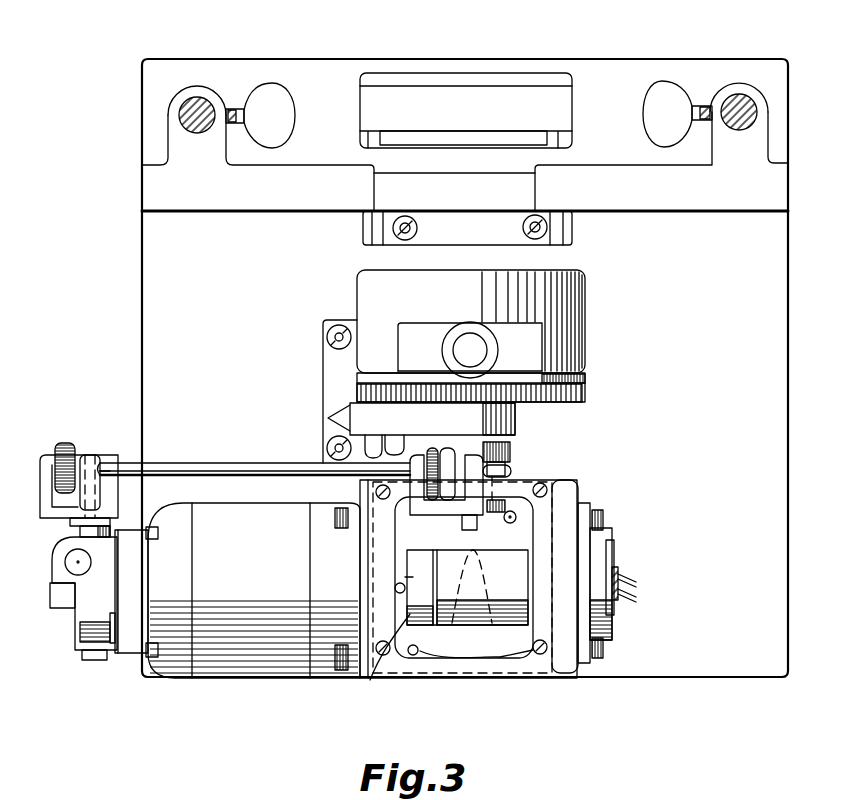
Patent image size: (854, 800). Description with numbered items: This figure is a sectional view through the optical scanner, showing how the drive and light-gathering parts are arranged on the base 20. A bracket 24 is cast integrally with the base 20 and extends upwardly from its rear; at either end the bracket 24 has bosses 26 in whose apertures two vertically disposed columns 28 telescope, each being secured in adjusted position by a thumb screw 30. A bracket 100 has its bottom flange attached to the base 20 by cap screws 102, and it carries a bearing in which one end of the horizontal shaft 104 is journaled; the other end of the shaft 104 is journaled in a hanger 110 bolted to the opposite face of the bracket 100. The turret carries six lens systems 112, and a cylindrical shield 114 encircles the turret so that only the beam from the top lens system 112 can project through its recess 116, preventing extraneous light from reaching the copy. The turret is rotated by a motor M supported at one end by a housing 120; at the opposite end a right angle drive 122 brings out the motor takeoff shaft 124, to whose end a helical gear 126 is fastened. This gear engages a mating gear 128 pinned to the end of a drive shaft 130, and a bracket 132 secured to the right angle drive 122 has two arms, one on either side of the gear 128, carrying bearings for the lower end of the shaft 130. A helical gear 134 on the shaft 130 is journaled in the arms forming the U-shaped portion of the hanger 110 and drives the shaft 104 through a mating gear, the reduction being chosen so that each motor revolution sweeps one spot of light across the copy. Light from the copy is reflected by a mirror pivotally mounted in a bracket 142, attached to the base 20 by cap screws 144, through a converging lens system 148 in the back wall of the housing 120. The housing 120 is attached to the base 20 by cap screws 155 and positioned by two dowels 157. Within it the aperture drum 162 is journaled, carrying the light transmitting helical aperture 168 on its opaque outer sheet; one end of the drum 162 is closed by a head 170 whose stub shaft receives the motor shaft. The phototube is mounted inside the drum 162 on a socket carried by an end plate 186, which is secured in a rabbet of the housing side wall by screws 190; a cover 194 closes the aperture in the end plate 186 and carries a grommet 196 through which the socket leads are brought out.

The base 20 is at (730, 662).
The bracket 24 is at (678, 197).
The bosses 26 is at (190, 87).
The columns 28 is at (180, 110).
The thumb screws 30 is at (275, 108).
The bracket 100 is at (332, 358).
The cap screws 102 is at (330, 330).
The horizontal shaft 104 is at (474, 536).
The hanger 110 is at (438, 515).
The lens systems 112 is at (497, 328).
The cylindrical shield 114 is at (580, 296).
The recess 116 is at (412, 324).
The housing 120 is at (396, 695).
The right angle drive 122 is at (85, 645).
The motor takeoff shaft 124 is at (110, 503).
The helical gear 126 is at (88, 467).
The mating gear 128 is at (67, 452).
The drive shaft 130 is at (230, 466).
The bracket 132 is at (50, 510).
The helical gear 134 is at (437, 447).
The bracket 142 is at (440, 136).
The cap screws 144 is at (525, 230).
The converging lens system 148 is at (512, 455).
The cap screws 155 is at (407, 519).
The dowels 157 is at (518, 516).
The aperture drum 162 is at (482, 630).
The helical aperture 168 is at (452, 618).
The head 170 is at (413, 577).
The end plate 186 is at (614, 623).
The screws 190 is at (610, 517).
The cover 194 is at (614, 548).
The grommet 196 is at (620, 572).